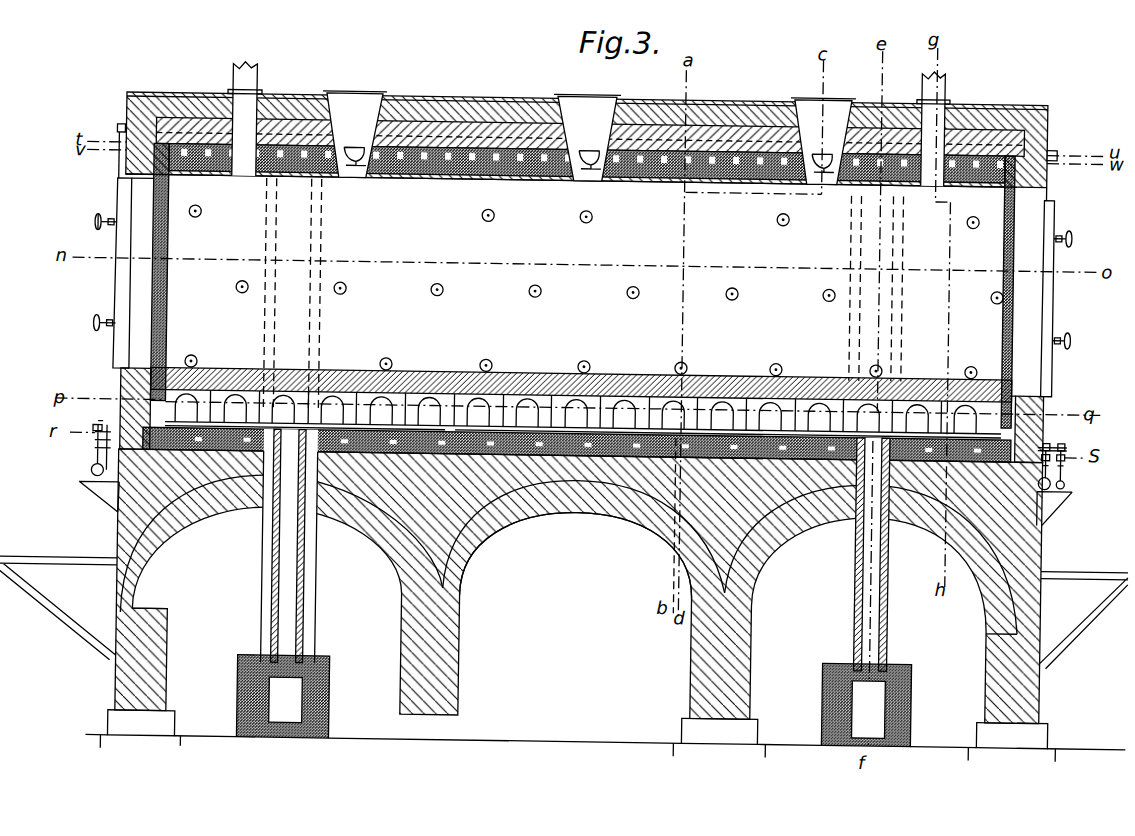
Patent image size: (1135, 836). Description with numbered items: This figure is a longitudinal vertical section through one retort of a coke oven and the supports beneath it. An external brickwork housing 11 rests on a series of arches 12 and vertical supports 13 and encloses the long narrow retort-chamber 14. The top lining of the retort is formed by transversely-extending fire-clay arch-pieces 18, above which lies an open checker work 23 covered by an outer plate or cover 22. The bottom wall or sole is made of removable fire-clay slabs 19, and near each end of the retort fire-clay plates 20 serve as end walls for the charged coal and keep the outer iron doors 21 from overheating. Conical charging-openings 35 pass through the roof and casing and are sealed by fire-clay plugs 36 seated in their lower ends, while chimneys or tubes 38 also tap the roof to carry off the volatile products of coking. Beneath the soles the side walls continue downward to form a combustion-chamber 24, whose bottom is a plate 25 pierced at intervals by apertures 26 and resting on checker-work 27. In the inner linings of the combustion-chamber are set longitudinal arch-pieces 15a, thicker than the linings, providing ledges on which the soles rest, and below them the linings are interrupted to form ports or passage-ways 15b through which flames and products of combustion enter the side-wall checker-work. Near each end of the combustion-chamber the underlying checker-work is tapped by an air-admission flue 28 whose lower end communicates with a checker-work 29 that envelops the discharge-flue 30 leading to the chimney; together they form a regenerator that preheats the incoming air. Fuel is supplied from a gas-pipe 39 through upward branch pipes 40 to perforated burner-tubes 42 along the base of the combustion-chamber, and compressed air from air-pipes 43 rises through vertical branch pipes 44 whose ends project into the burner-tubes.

The external brickwork housing 11 is at (487, 104).
The arches 12 is at (602, 506).
The vertical supports 13 is at (455, 656).
The retort-chambers 14 is at (584, 299).
The arch-pieces 15a is at (337, 389).
The ports or passage-ways 15b is at (482, 395).
The fire-clay arch-pieces 18 is at (650, 168).
The fire-clay slabs 19 is at (622, 375).
The fire-clay plates 20 is at (170, 290).
The outer iron doors 21 is at (118, 280).
The outer plate or cover 22 is at (737, 131).
The checker work 23 is at (748, 160).
The combustion-chambers 24 is at (583, 418).
The plates 25 is at (415, 425).
The apertures 26 is at (212, 432).
The checker-work 27 is at (370, 474).
The air-admission flue 28 is at (574, 587).
The checker-work 29 is at (336, 681).
The discharge-flue 30 is at (577, 705).
The conical charging-openings 35 is at (589, 138).
The fire-clay plugs 36 is at (357, 174).
The chimneys or tubes 38 is at (250, 174).
The gas-pipe 39 is at (97, 478).
The branch pipes 40 is at (1073, 436).
The burner-tubes 42 is at (922, 412).
The air-pipes 43 is at (85, 480).
The vertical branch pipes 44 is at (1070, 456).